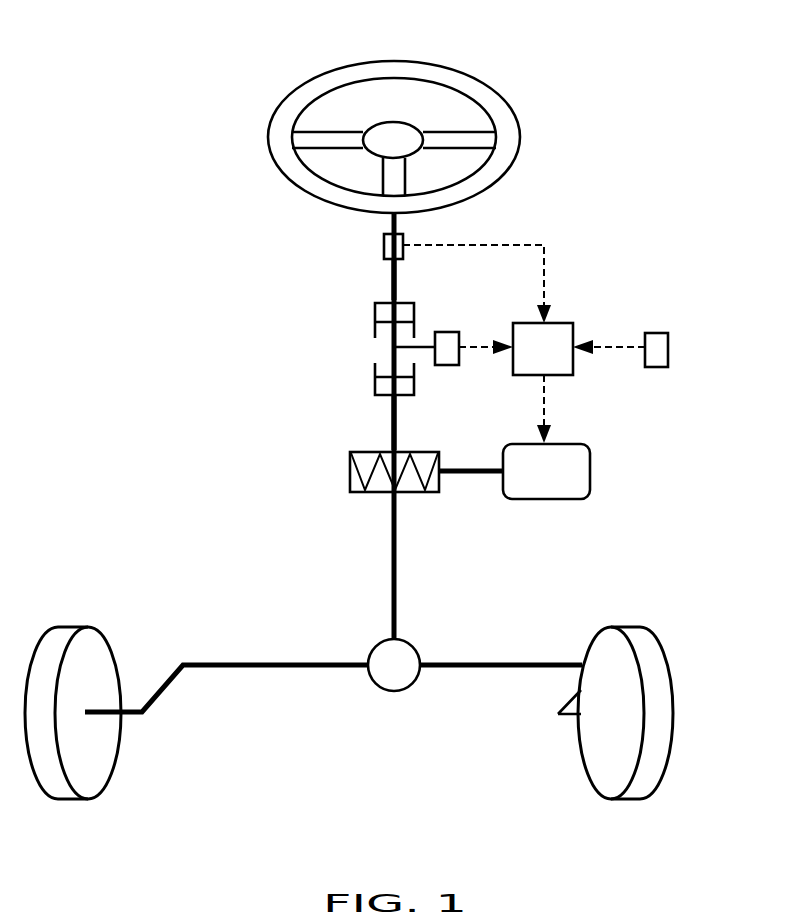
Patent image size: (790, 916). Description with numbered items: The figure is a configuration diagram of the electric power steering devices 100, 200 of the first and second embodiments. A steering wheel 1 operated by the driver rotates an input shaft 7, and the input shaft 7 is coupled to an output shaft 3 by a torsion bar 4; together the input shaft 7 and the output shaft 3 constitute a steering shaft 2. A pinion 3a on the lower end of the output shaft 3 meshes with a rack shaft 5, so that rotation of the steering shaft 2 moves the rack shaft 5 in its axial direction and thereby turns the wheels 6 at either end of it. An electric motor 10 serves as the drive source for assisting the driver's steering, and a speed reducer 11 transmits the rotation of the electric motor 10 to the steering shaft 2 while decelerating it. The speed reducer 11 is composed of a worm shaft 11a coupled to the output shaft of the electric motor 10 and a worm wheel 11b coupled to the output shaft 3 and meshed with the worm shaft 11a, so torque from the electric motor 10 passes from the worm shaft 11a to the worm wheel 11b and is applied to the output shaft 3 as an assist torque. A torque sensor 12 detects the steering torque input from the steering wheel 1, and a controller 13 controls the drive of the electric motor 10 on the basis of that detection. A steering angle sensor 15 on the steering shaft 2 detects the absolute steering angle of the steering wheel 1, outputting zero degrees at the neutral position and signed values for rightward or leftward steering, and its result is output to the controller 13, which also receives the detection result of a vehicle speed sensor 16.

The steering wheel 1 is at (488, 100).
The electric power steering device 100 is at (609, 153).
The electric power steering device 200 is at (552, 203).
The steering shaft 2 is at (382, 278).
The input shaft 7 is at (392, 288).
The output shaft 3 is at (393, 418).
The pinion 3a is at (402, 655).
The torsion bar 4 is at (393, 338).
The rack shaft 5 is at (260, 667).
The wheels 6 is at (93, 647).
The electric motor 10 is at (552, 490).
The speed reducer 11 is at (373, 503).
The worm shaft 11a is at (478, 475).
The worm wheel 11b is at (357, 493).
The torque sensor 12 is at (447, 332).
The controller 13 is at (552, 333).
The steering angle sensor 15 is at (403, 246).
The vehicle speed sensor 16 is at (655, 345).